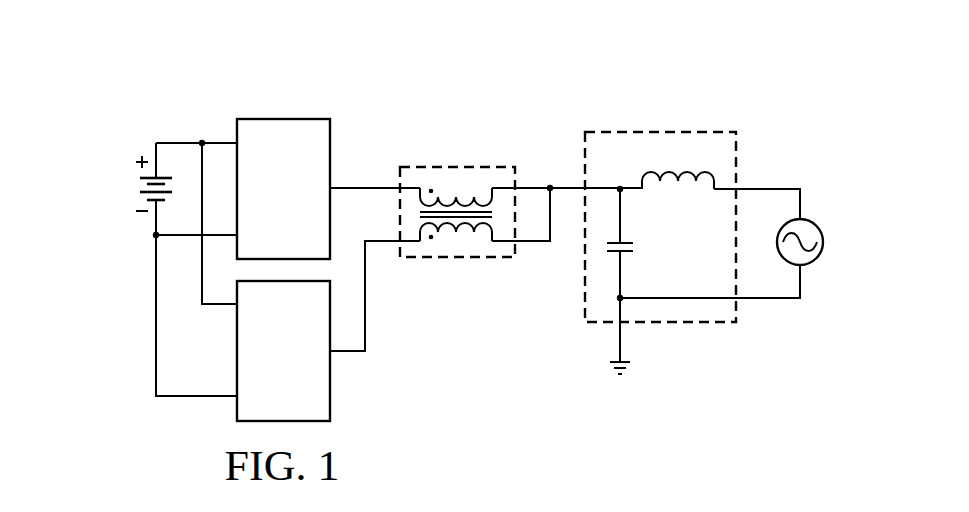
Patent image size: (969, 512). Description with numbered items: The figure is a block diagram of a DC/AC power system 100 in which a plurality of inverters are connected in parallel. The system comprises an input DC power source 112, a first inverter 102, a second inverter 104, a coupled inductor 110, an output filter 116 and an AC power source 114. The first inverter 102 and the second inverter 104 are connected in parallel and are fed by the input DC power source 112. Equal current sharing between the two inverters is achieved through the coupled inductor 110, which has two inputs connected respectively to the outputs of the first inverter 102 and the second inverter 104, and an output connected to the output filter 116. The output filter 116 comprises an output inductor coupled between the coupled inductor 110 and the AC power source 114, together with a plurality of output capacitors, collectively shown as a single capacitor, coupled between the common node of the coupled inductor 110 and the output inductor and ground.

The DC/AC power system 100 is at (380, 71).
The first inverter 102 is at (263, 202).
The second inverter 104 is at (263, 364).
The coupled inductor 110 is at (457, 166).
The input DC power source 112 is at (135, 186).
The AC power source 114 is at (823, 232).
The output filter 116 is at (677, 324).